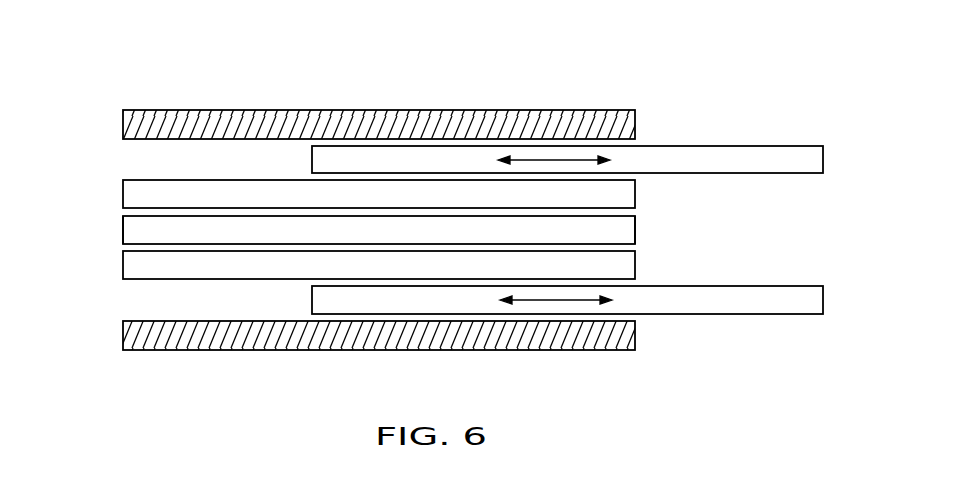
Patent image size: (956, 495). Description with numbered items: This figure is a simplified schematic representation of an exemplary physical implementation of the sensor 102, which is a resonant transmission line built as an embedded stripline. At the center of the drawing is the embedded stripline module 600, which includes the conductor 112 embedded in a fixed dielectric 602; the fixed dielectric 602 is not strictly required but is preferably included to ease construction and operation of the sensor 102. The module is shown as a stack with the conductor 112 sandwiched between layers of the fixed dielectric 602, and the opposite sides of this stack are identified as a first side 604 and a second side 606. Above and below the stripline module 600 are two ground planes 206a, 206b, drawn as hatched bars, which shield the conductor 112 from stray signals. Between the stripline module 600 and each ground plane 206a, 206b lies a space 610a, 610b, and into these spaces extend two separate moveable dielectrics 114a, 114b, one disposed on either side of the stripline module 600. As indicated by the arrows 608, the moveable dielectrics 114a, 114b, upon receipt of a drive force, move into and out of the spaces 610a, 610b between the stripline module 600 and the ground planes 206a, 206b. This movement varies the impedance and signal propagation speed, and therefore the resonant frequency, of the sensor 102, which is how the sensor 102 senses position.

The sensor 102 is at (431, 195).
The conductor 112 is at (310, 242).
The moveable dielectric 114a is at (717, 172).
The moveable dielectric 114b is at (717, 312).
The ground plane 206a is at (635, 121).
The ground plane 206b is at (635, 338).
The embedded stripline module 600 is at (427, 229).
The fixed dielectric 602 is at (310, 207).
The first side of stack 604 is at (123, 230).
The second side of stack 606 is at (635, 230).
The arrows 608 is at (555, 158).
The space 610a is at (252, 172).
The space 610b is at (252, 314).